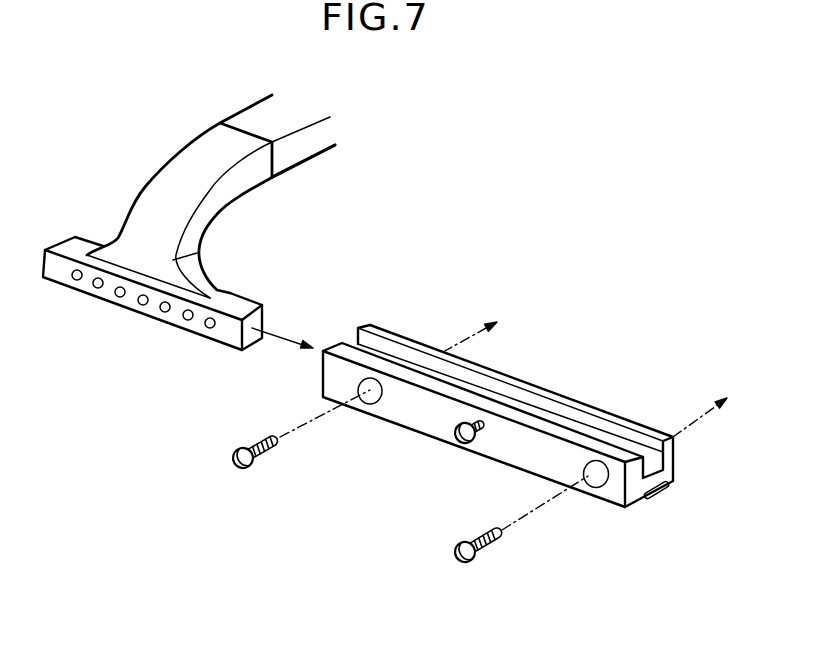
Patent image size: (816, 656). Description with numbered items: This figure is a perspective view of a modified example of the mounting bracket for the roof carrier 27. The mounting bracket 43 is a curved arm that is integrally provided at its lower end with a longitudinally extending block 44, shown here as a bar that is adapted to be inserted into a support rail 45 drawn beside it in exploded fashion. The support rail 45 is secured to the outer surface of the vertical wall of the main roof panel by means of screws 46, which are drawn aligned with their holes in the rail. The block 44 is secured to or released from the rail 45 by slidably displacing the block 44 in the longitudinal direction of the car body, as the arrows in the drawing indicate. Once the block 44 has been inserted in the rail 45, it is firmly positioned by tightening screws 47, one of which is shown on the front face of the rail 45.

The roof carrier 27 is at (211, 169).
The mounting bracket 43 is at (212, 205).
The longitudinally extending block 44 is at (235, 303).
The support rail 45 is at (532, 382).
The screws 46 is at (235, 463).
The screws 47 is at (457, 437).